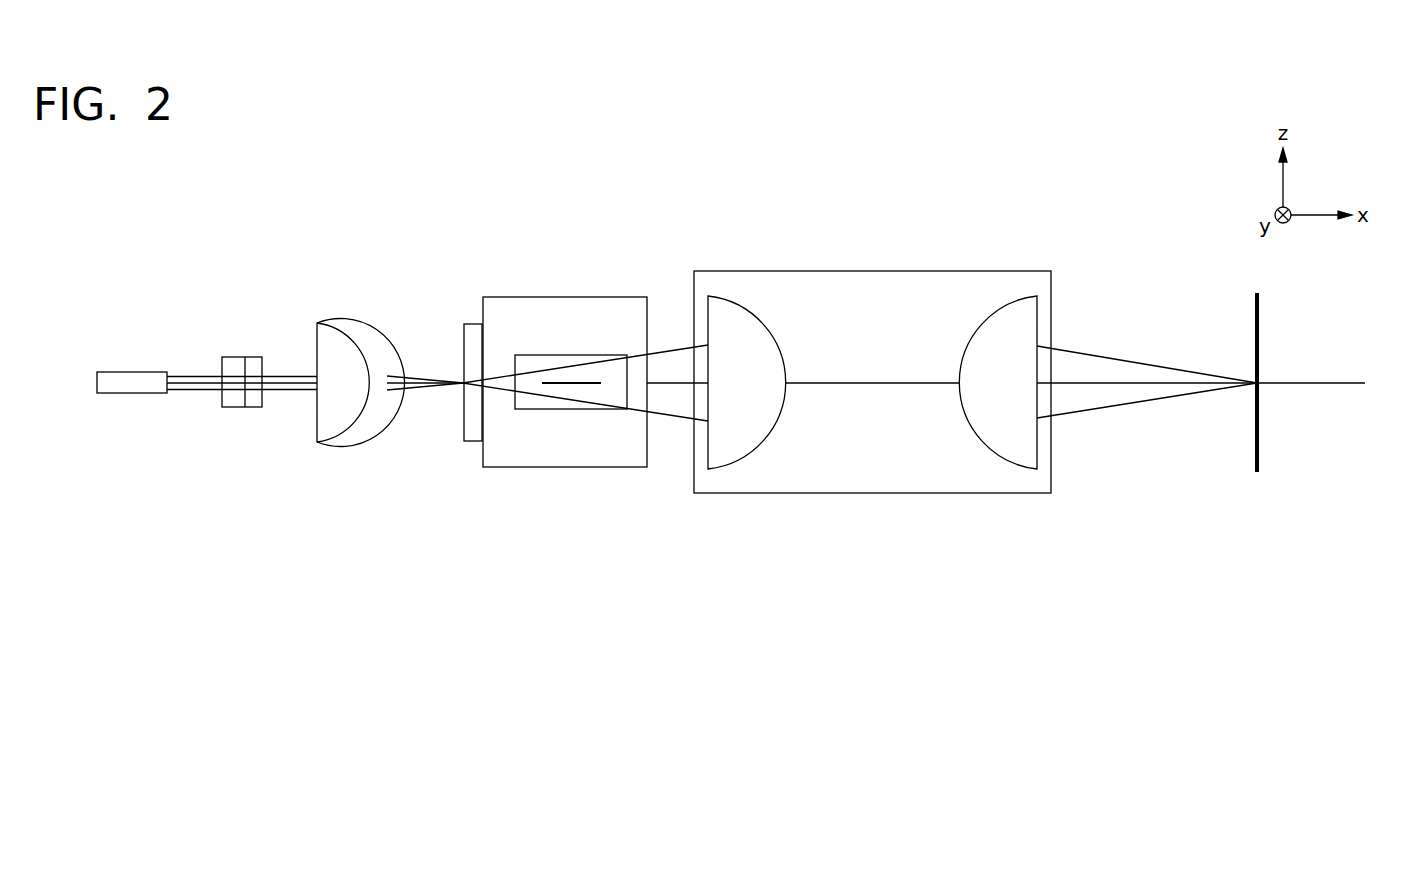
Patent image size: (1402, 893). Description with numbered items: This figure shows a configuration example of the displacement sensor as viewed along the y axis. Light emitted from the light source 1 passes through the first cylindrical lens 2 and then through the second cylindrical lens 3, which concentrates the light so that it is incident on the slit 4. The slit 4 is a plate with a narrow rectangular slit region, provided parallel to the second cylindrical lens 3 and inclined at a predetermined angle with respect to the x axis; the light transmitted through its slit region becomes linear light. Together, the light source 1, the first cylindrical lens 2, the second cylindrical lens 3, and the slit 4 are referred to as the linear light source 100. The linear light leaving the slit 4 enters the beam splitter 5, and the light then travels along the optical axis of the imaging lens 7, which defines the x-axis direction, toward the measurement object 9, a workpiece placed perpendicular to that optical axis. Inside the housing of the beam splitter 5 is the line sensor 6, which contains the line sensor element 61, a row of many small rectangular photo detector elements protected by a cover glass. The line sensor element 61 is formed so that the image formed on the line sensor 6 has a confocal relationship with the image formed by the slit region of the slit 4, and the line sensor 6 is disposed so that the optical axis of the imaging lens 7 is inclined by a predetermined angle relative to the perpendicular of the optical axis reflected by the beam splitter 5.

The light source 1 is at (133, 371).
The first cylindrical lens 2 is at (232, 357).
The second cylindrical lens 3 is at (344, 323).
The slit 4 is at (477, 323).
The beam splitter 5 is at (565, 297).
The line sensor 6 is at (541, 410).
The line sensor element 61 is at (581, 386).
The imaging lens 7 is at (880, 271).
The measurement object 9 is at (1254, 315).
The linear light source 100 is at (482, 370).